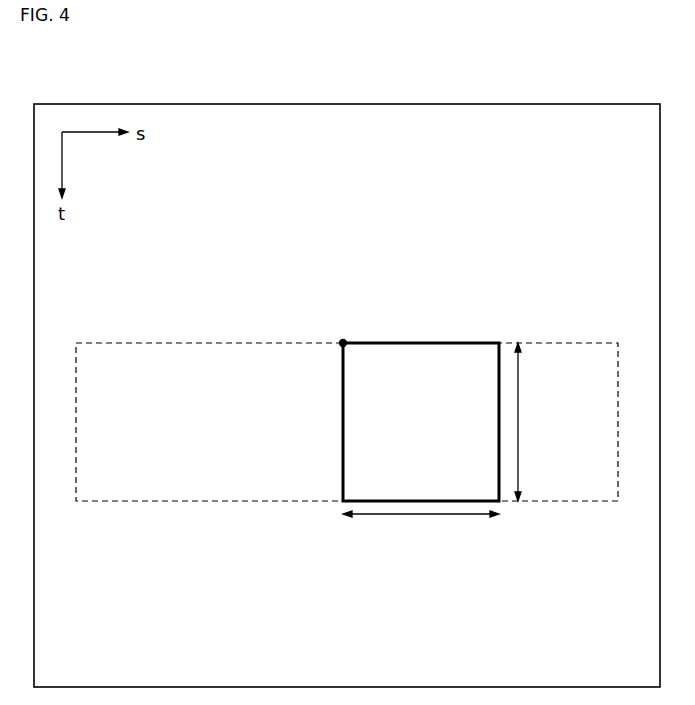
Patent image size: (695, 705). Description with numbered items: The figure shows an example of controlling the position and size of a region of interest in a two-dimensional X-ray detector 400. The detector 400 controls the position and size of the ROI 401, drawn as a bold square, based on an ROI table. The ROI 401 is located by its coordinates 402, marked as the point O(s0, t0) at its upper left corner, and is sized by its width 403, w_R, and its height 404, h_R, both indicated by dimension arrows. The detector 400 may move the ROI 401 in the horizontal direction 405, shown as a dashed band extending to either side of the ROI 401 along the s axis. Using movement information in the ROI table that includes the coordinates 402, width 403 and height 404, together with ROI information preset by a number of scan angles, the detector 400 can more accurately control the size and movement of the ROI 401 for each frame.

The two-dimensional X-ray detector 400 is at (348, 104).
The ROI 401 is at (423, 358).
The coordinates 402 is at (340, 347).
The width 403 is at (425, 545).
The height 404 is at (540, 413).
The horizontal direction 405 is at (204, 342).